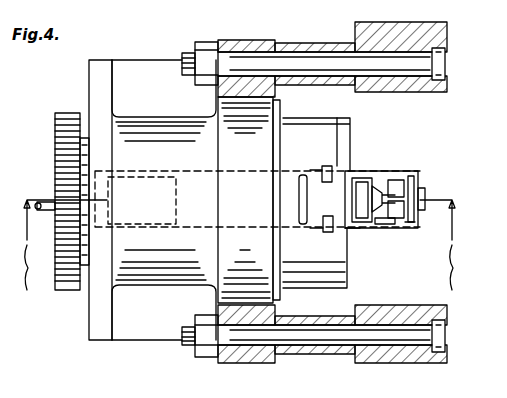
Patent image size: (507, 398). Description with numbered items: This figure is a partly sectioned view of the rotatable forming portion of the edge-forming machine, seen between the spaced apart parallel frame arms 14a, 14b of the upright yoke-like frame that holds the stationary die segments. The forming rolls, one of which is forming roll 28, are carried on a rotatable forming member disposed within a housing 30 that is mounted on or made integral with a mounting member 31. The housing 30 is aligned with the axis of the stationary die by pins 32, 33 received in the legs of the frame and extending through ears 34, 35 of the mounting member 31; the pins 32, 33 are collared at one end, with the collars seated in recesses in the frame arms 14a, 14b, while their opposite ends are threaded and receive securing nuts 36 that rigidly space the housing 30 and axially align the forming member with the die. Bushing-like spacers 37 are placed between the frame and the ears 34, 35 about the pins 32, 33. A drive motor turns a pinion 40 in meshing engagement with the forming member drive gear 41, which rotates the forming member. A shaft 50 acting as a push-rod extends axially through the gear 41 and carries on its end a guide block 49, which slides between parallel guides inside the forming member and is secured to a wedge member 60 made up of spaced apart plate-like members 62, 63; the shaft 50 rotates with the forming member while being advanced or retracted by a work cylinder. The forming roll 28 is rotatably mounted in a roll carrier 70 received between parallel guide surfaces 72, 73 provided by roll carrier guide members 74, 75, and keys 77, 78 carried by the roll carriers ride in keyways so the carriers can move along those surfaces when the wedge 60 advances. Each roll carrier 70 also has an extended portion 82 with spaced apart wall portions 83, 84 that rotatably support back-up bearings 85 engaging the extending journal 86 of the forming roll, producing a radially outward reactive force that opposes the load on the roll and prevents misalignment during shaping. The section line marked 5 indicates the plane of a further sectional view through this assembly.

The section line 5- 5 is at (239, 245).
The frame arm 14a is at (437, 320).
The frame arm 14b is at (437, 43).
The forming roll 28 is at (370, 195).
The housing 30 is at (143, 130).
The mounting member 31 is at (100, 325).
The pin 32 is at (386, 330).
The pin 33 is at (400, 64).
The ear 34 is at (222, 352).
The ear 35 is at (228, 45).
The securing nut 36 is at (207, 318).
The bushing-like spacer 37 is at (315, 322).
The pinion 40 is at (58, 160).
The forming member drive gear 41 is at (70, 116).
The guide block 49 is at (176, 182).
The shaft 50 is at (44, 202).
The wedge member 60 is at (236, 166).
The plate-like member 62 is at (293, 172).
The plate-like member 63 is at (240, 226).
The roll carrier 70 is at (356, 178).
The guide surface 72 is at (345, 170).
The guide surface 73 is at (347, 232).
The roll carrier guide member 74 is at (297, 128).
The roll carrier guide member 75 is at (338, 272).
The key 77 is at (330, 165).
The key 78 is at (326, 232).
The extended portion 82 is at (412, 230).
The wall portion 83 is at (415, 180).
The wall portion 84 is at (388, 226).
The back-up bearing 85 is at (400, 186).
The journal 86 is at (426, 195).